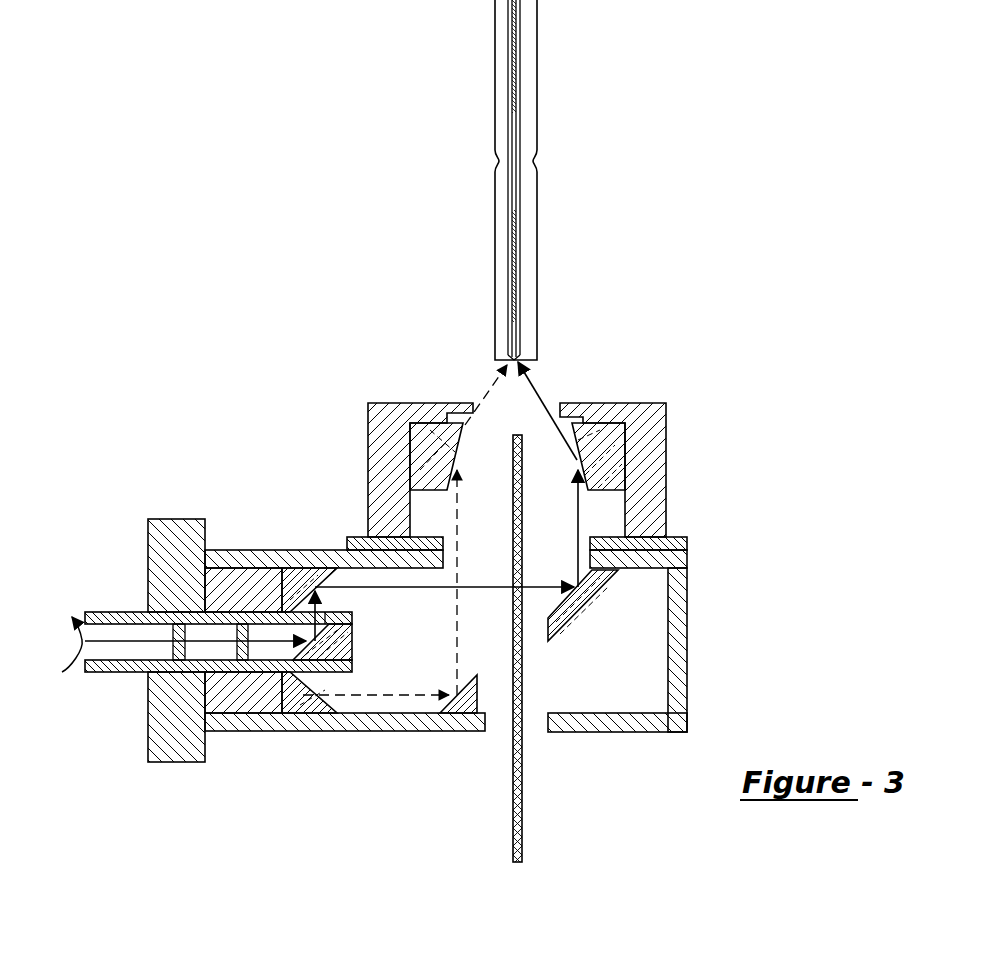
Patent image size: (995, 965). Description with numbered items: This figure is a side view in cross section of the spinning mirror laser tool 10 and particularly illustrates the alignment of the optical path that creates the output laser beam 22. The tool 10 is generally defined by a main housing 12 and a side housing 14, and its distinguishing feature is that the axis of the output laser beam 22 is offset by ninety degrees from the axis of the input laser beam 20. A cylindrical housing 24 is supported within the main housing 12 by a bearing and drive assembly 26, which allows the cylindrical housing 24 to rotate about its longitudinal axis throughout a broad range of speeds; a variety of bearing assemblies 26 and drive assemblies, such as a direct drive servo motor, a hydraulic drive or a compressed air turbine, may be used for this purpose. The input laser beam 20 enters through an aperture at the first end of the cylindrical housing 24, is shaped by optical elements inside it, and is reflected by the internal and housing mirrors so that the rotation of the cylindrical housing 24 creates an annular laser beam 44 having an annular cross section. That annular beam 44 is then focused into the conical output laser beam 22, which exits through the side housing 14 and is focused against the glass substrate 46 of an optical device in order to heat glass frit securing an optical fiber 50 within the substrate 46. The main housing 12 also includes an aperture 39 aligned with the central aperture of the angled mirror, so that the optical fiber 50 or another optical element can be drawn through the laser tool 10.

The laser tool 10 is at (693, 371).
The main housing 12 is at (350, 720).
The side housing 14 is at (367, 470).
The input laser beam 20 is at (110, 643).
The output laser beam 22 is at (551, 415).
The cylindrical housing 24 is at (122, 617).
The bearing and drive assembly 26 is at (240, 692).
The aperture 39 is at (548, 718).
The annular laser beam 44 is at (583, 510).
The glass substrate 46 is at (487, 182).
The optical fiber 50 is at (513, 537).